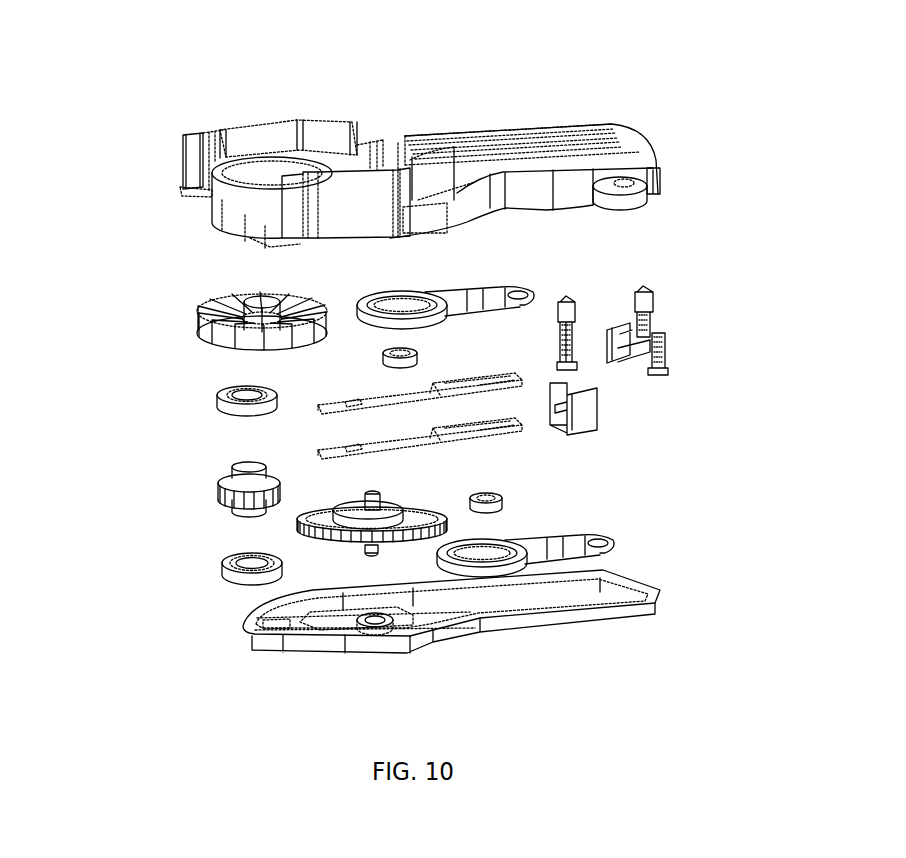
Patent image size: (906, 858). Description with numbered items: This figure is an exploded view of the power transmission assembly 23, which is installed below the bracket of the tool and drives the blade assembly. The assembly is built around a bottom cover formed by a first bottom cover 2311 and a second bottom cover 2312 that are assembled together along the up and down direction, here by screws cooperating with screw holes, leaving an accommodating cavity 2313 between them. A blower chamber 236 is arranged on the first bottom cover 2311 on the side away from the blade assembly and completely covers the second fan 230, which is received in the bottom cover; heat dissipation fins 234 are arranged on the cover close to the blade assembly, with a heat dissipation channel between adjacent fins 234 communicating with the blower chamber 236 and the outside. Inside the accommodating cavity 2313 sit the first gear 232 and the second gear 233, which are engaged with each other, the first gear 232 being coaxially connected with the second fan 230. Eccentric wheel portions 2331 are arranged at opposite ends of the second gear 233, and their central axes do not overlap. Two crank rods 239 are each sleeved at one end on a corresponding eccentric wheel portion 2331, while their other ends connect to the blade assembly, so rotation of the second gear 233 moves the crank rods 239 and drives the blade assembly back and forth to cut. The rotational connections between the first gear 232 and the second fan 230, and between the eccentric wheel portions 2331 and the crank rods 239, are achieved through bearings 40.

The power transmission assembly 23 is at (88, 76).
The first bottom cover 2311 is at (235, 198).
The second bottom cover 2312 is at (272, 652).
The accommodating cavity 2313 is at (410, 620).
The second fan 230 is at (205, 315).
The first gear 232 is at (222, 493).
The second gear 233 is at (440, 507).
The eccentric wheel portion 2331 is at (362, 507).
The heat dissipation fin 234 is at (658, 172).
The blower chamber 236 is at (312, 178).
The crank rod 239 is at (455, 300).
The bearing 40 is at (412, 357).